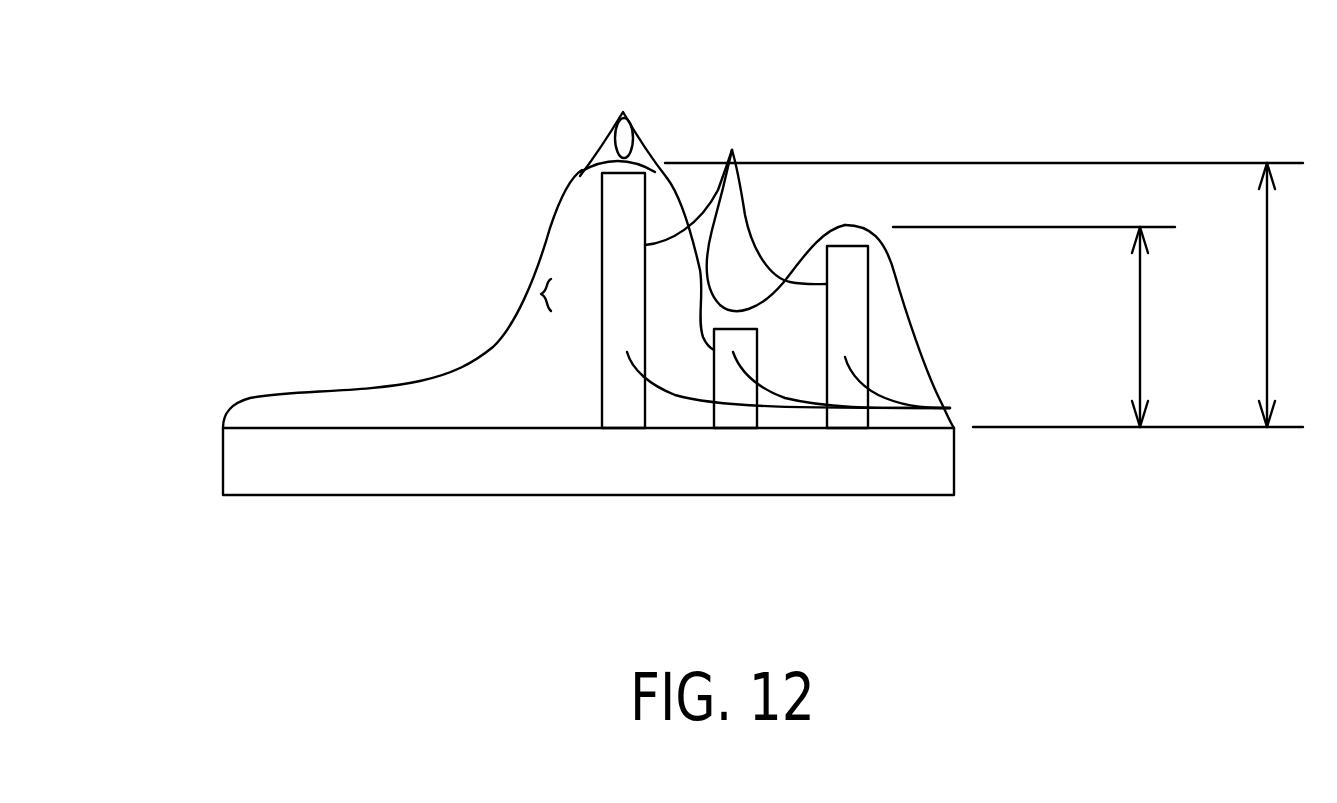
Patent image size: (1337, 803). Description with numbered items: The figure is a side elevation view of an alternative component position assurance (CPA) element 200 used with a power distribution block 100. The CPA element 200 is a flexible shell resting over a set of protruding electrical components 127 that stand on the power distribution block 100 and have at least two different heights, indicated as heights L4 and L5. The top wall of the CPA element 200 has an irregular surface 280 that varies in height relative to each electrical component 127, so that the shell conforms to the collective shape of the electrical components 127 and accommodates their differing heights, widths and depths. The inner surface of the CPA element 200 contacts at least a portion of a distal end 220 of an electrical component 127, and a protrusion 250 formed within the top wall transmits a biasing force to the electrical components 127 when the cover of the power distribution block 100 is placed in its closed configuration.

The power distribution block 100 is at (215, 461).
The component position assurance (CPA) element 200 is at (423, 378).
The irregular surface 280 is at (541, 293).
The protrusion 250 is at (615, 138).
The distal end 220 is at (745, 205).
The electrical components 127 is at (950, 408).
The height of electrical component L4 is at (1169, 327).
The height of electrical component L5 is at (1296, 295).